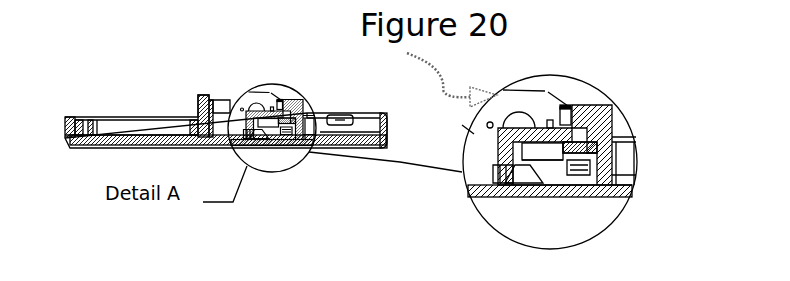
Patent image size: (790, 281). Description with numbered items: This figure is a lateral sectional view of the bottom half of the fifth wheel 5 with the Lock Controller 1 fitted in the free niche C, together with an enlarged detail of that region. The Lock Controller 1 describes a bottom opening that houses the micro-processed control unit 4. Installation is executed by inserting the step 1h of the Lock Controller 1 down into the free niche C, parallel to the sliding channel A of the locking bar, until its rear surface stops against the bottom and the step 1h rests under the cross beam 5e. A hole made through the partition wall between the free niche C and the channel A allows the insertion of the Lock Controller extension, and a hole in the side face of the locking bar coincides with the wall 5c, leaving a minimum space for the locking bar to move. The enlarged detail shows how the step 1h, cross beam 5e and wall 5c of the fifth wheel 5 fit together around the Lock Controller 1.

The Lock Controller 1 is at (550, 120).
The step 1h is at (615, 117).
The fifth wheel 5 is at (565, 108).
The cross beam 5e is at (587, 105).
The wall 5c is at (467, 192).
The micro-processed control unit 4 is at (547, 153).
The sliding channel A is at (474, 134).
The free niche C is at (547, 198).